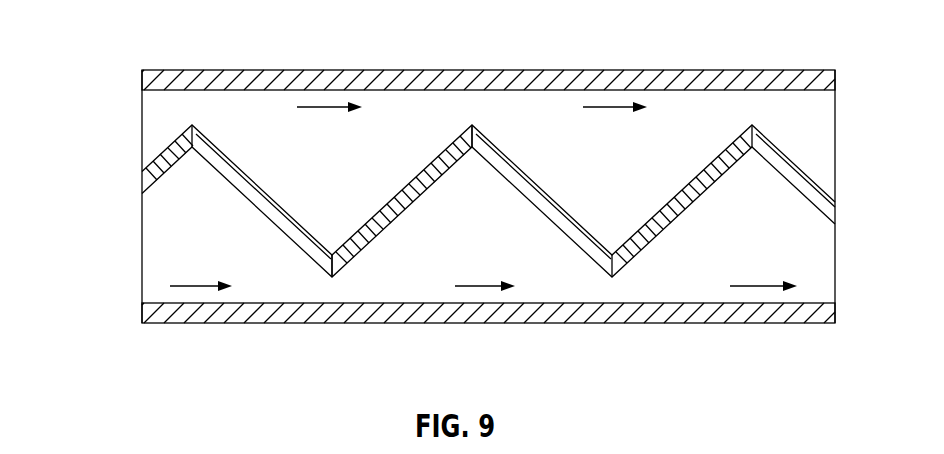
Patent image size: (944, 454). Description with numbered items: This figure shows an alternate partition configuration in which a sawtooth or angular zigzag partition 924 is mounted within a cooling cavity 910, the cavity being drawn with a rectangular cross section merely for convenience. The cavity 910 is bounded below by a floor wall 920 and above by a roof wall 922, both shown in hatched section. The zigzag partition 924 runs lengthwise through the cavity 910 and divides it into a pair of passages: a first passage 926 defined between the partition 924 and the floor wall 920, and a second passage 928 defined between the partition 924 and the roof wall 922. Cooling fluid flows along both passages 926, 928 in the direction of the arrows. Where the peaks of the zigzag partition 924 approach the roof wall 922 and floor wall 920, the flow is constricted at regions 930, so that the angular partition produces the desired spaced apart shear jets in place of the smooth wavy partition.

The cavity 910 is at (96, 212).
The floor wall 920 is at (637, 310).
The roof wall 922 is at (735, 82).
The sawtooth zigzag partition 924 is at (830, 206).
The first passage 926 is at (494, 242).
The second passage 928 is at (354, 195).
The shear jet region 930 is at (473, 110).